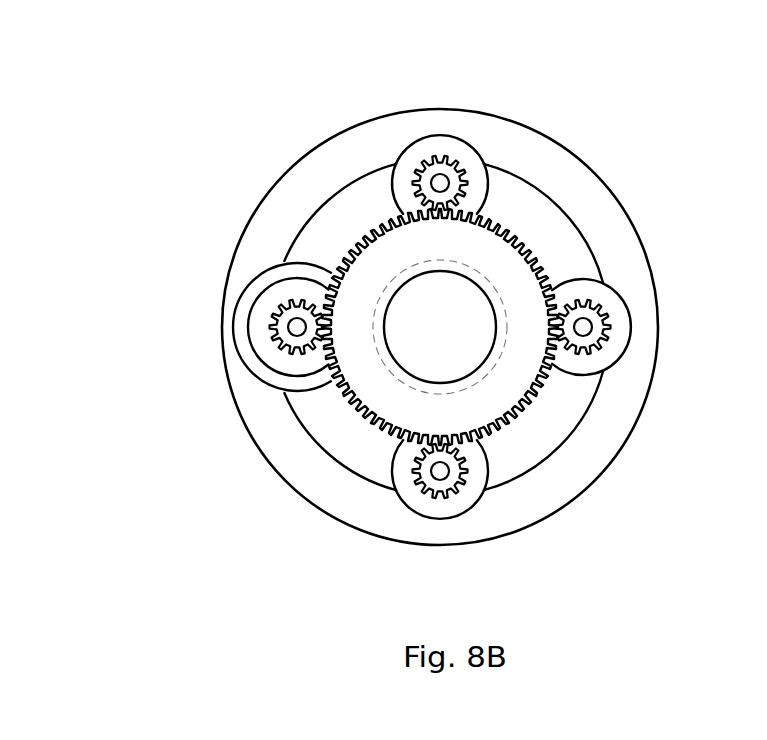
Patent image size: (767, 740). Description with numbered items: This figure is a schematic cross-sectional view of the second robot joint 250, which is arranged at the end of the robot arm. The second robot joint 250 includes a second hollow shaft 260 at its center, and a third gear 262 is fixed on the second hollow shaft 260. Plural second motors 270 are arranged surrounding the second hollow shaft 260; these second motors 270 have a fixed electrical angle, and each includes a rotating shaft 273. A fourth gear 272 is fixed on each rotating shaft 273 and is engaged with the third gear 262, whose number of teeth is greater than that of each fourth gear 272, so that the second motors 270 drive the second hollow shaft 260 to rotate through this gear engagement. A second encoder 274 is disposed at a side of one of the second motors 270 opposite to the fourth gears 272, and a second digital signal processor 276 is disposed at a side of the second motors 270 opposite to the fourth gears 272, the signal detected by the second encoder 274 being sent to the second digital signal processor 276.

The second robot joint 250 is at (156, 164).
The second hollow shaft 260 is at (478, 283).
The third gear 262 is at (505, 395).
The second motor 270 is at (478, 184).
The fourth gear 272 is at (605, 337).
The rotating shaft 273 is at (437, 174).
The second encoder 274 is at (238, 328).
The second digital signal processor 276 is at (342, 209).